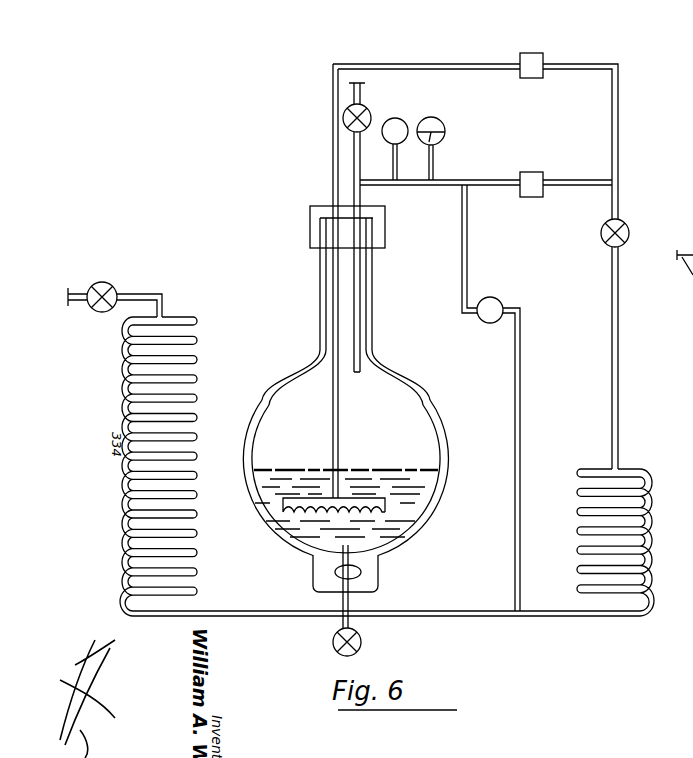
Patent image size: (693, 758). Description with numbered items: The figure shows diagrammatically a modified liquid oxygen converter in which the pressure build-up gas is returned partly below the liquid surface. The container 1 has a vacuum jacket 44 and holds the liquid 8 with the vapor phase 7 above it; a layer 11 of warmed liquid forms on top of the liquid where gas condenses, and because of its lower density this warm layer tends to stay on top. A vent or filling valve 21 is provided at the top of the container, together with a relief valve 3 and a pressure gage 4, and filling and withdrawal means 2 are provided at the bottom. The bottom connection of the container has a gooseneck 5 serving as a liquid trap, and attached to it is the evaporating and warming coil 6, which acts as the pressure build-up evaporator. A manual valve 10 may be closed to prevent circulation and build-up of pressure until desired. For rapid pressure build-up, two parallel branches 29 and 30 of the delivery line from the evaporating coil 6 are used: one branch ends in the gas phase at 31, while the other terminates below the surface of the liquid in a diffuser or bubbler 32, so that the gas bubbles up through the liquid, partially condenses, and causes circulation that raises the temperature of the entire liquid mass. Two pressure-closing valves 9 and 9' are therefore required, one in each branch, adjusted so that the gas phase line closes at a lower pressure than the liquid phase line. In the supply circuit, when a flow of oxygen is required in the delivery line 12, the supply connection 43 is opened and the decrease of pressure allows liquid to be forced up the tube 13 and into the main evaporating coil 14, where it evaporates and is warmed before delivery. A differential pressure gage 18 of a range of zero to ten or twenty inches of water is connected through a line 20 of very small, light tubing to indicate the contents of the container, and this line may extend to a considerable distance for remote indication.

The container 1 is at (266, 400).
The filling and withdrawal means 2 is at (333, 645).
The relief valve 3 is at (442, 122).
The pressure gage 4 is at (399, 119).
The gooseneck 5 is at (363, 571).
The evaporating and warming coil 6 is at (600, 597).
The vapor phase 7 is at (410, 410).
The liquid 8 is at (386, 522).
The pressure actuated valve 9 is at (553, 59).
The pressure-closing valve 9' is at (551, 170).
The manual valve 10 is at (627, 226).
The layer of warmed liquid 11 is at (433, 469).
The delivery line 12 is at (84, 302).
The tube 13 is at (339, 431).
The main evaporating coil 14 is at (122, 547).
The differential pressure gage 18 is at (501, 303).
The line to the gage 20 is at (468, 255).
The vent or filling valve 21 is at (343, 118).
The parallel branch 29 is at (574, 187).
The parallel branch 30 is at (607, 70).
The gas phase end 31 is at (361, 310).
The diffuser or bubbler 32 is at (318, 505).
The supply connection 43 is at (113, 287).
The vacuum jacket 44 is at (321, 322).